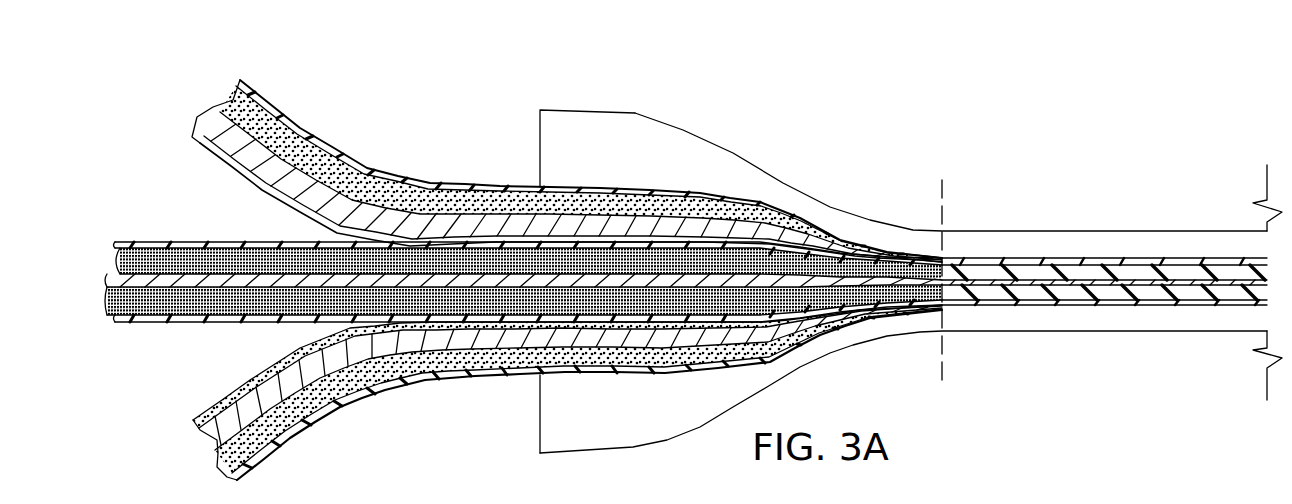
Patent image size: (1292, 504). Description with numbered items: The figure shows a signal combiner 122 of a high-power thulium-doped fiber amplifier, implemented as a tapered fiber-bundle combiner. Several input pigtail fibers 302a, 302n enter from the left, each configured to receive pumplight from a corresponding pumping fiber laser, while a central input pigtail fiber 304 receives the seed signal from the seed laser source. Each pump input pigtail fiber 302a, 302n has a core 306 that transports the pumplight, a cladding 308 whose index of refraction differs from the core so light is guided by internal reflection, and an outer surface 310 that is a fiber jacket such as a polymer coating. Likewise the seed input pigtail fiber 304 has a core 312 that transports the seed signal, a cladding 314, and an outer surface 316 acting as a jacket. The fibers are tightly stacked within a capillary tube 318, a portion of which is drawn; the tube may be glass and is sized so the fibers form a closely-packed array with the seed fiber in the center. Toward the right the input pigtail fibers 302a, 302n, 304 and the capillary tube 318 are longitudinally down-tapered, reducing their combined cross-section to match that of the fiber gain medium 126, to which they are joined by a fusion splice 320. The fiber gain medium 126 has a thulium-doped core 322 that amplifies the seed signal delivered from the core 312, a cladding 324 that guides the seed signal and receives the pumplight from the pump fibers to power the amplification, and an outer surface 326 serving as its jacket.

The signal combiner 122 is at (852, 102).
The fiber gain medium 126 is at (1104, 275).
The input pigtail fiber 302a is at (567, 158).
The input pigtail fiber 302n is at (348, 437).
The input pigtail fiber 304 is at (489, 265).
The core 306 is at (404, 213).
The cladding 308 is at (332, 157).
The outer surface 310 is at (462, 182).
The core 312 is at (110, 278).
The cladding 314 is at (128, 257).
The outer surface 316 is at (190, 325).
The capillary tube 318 is at (594, 111).
The fusion splice 320 is at (944, 187).
The core 322 is at (988, 282).
The cladding 324 is at (1092, 293).
The outer surface 326 is at (1166, 303).